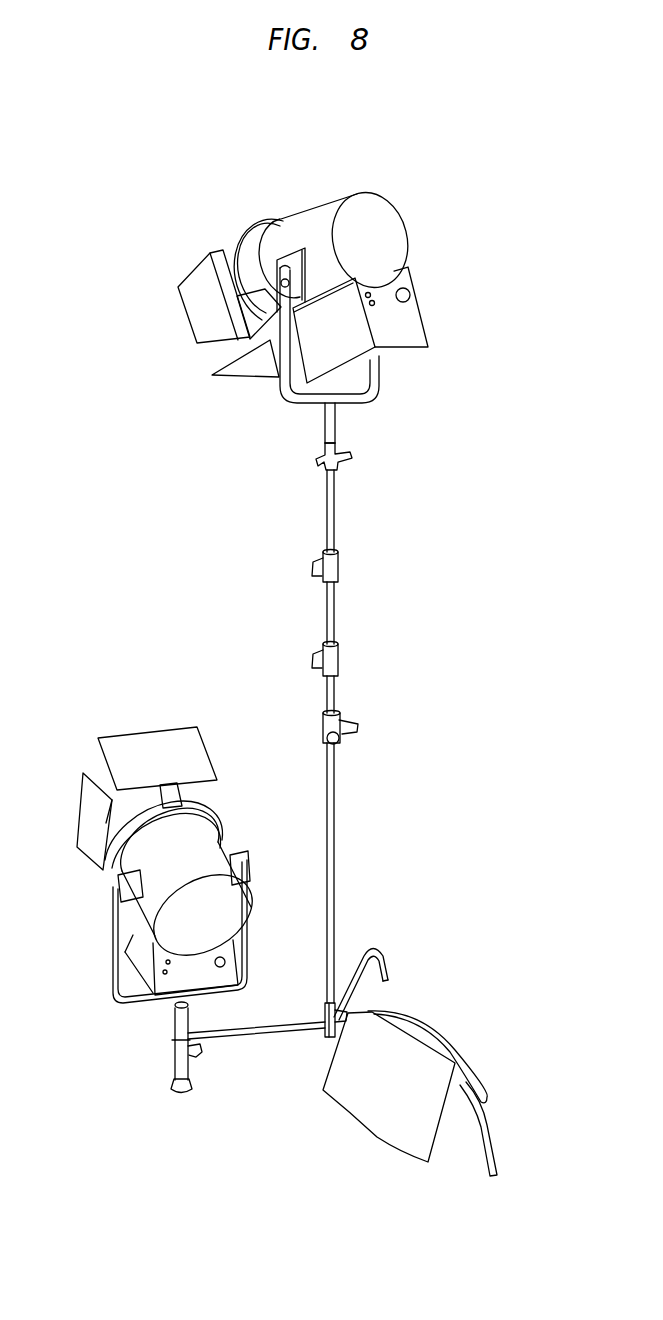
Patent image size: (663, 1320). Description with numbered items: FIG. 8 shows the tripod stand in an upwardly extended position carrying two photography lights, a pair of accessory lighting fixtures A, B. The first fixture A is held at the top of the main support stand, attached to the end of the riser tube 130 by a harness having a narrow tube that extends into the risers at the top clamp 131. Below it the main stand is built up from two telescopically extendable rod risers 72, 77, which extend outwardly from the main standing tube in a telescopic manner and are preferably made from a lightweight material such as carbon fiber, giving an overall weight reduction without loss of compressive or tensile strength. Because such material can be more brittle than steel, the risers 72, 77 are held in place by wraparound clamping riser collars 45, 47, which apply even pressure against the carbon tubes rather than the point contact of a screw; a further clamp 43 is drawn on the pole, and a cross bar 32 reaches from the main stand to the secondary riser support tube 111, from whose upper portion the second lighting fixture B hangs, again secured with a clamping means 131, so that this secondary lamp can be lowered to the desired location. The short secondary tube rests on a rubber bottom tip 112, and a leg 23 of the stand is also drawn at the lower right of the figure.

The accessory lighting fixture A is at (158, 292).
The accessory lighting fixture B is at (58, 800).
The riser tube 130 is at (338, 428).
The top clamp 131 is at (342, 460).
The rod riser 72 is at (338, 515).
The clamping riser collar 47 is at (340, 562).
The rod riser 77 is at (338, 616).
The clamping riser collar 45 is at (340, 655).
The pole clamp 43 is at (324, 720).
The cross bar 32 is at (264, 1042).
The secondary riser support tube 111 is at (176, 1070).
The rubber bottom tip 112 is at (180, 1097).
The leg 23 is at (491, 1143).